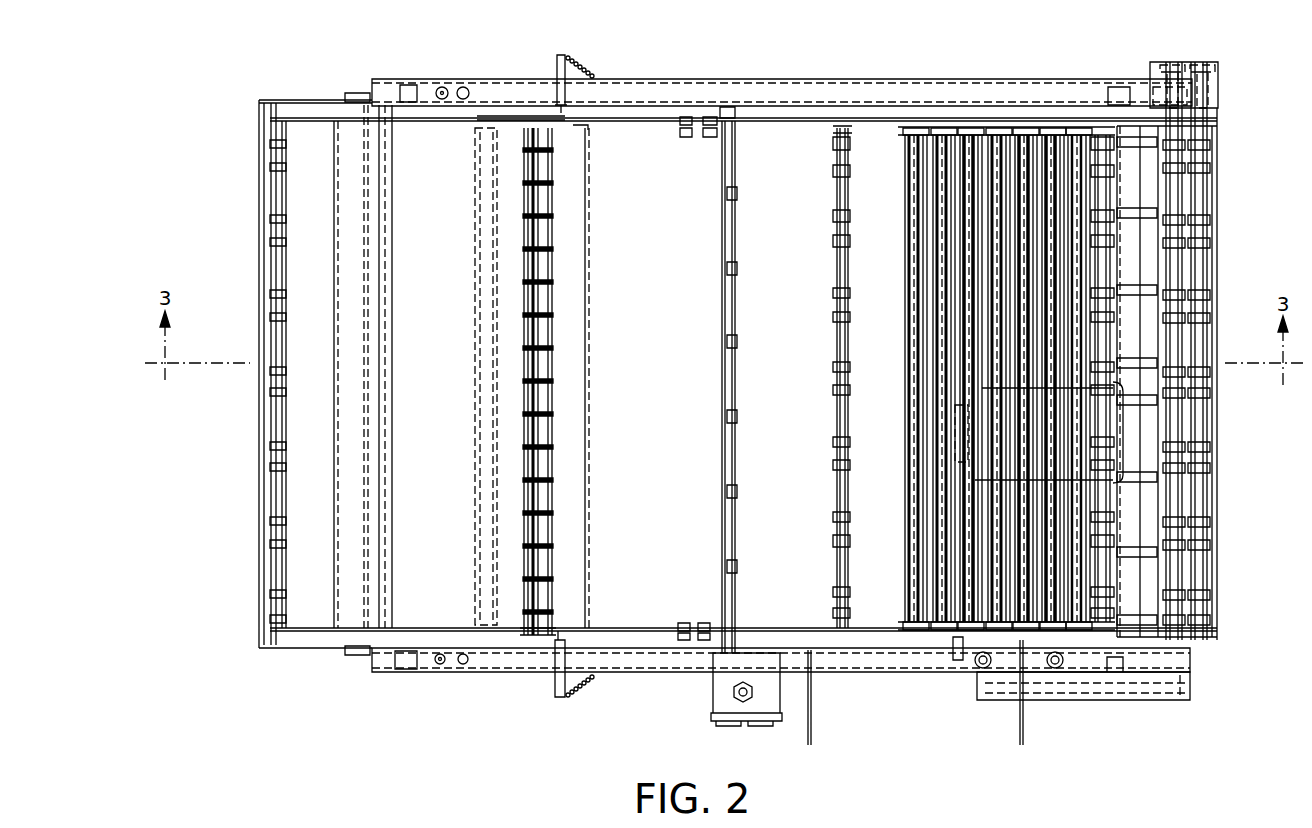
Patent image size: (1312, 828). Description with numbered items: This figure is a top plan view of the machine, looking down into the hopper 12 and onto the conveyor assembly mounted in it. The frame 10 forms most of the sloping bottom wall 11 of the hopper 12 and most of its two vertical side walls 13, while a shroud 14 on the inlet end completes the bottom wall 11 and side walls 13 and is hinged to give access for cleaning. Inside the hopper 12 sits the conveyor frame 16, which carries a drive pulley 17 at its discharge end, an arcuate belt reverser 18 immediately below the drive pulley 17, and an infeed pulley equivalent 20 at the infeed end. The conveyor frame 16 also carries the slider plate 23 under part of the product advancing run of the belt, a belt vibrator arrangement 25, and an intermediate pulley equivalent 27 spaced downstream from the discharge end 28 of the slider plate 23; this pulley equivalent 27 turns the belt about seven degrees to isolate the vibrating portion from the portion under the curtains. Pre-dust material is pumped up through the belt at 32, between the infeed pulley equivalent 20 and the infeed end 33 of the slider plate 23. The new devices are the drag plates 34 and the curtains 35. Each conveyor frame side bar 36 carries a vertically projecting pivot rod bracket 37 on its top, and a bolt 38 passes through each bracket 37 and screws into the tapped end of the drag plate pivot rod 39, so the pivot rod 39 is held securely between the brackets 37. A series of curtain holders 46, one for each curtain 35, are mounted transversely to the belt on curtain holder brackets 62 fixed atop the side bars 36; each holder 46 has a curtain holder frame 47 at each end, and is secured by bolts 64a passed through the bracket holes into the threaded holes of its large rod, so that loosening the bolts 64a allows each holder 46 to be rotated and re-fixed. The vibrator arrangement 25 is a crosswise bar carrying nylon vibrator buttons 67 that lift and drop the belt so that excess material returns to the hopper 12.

The frame 10 is at (605, 679).
The sloping bottom wall 11 is at (858, 133).
The hopper 12 is at (782, 146).
The vertical side walls 13 is at (745, 112).
The shroud 14 is at (250, 548).
The conveyor frame 16 is at (622, 116).
The drive pulley 17 is at (1180, 622).
The arcuate belt reverser 18 is at (1133, 618).
The infeed pulley equivalent 20 is at (270, 573).
The slider plate 23 is at (562, 480).
The belt vibrator arrangement 25 is at (730, 545).
The intermediate pulley equivalent 27 is at (837, 477).
The discharge end of the slider plate 28 is at (588, 495).
The infeed end of the product advancing run 32 is at (298, 602).
The infeed end of the slider plate 33 is at (330, 610).
The drag plates 34 is at (522, 155).
The curtains 35 is at (1095, 132).
The conveyor frame side bars 36 is at (663, 128).
The pivot rod bracket 37 is at (520, 633).
The bolt 38 is at (533, 630).
The drag plate pivot rod 39 is at (530, 137).
The curtain holders 46 is at (958, 128).
The curtain holder frames 47 is at (1033, 128).
The curtain holder brackets 62 is at (903, 130).
The bolt 64a is at (945, 128).
The nylon vibrator buttons 67 is at (737, 483).